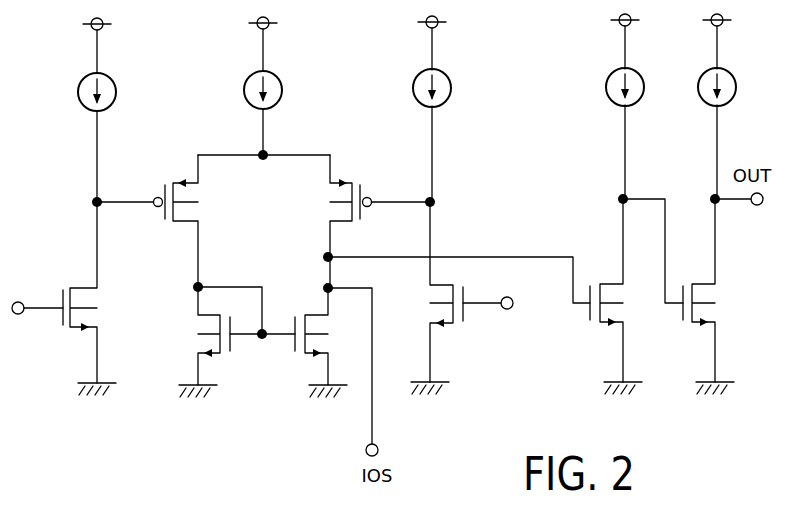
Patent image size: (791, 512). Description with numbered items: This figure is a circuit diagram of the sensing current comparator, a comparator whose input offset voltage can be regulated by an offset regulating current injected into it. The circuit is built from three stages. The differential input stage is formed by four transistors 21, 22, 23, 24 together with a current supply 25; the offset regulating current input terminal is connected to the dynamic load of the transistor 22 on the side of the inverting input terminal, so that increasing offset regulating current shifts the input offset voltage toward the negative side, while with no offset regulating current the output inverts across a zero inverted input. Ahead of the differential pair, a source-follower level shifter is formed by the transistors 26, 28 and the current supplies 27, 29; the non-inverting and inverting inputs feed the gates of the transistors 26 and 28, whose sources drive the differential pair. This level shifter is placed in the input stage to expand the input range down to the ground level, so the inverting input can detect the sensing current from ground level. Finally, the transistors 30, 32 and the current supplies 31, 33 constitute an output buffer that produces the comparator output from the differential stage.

The transistor 21 is at (166, 181).
The transistor 22 is at (357, 179).
The transistor 23 is at (202, 326).
The transistor 24 is at (303, 312).
The current supply 25 is at (280, 73).
The transistor 26 is at (70, 286).
The current supply 27 is at (110, 76).
The transistor 28 is at (455, 325).
The current supply 29 is at (450, 74).
The transistor 30 is at (600, 279).
The current supply 31 is at (630, 69).
The transistor 32 is at (713, 291).
The current supply 33 is at (729, 70).